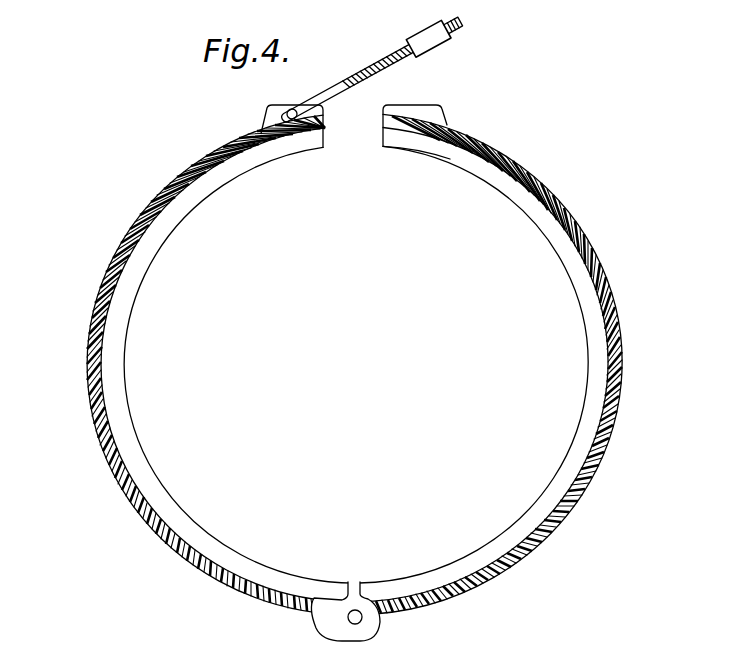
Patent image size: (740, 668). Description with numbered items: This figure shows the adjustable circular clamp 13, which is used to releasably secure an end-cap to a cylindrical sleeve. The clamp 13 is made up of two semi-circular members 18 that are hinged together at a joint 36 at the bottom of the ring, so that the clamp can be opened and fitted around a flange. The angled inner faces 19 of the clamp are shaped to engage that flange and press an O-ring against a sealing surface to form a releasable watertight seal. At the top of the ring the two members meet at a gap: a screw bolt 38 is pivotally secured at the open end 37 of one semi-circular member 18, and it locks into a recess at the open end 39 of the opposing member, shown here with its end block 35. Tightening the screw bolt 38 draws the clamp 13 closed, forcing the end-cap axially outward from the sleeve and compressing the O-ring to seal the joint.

The adjustable circular clamp 13 is at (167, 188).
The semi-circular member 18 is at (97, 414).
The inner faces 19 is at (113, 343).
The end block 35 is at (436, 115).
The joint 36 is at (366, 624).
The open end 37 is at (270, 118).
The screw bolt 38 is at (370, 68).
The open end 39 is at (403, 143).